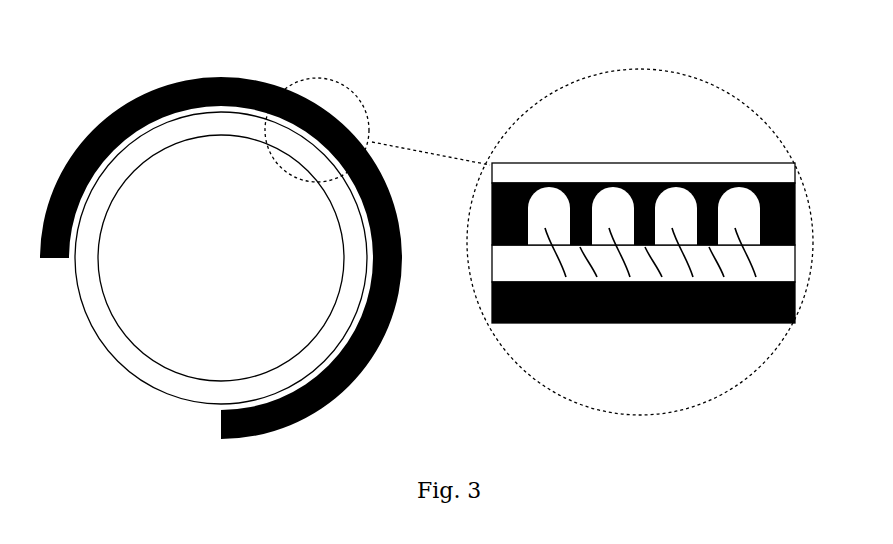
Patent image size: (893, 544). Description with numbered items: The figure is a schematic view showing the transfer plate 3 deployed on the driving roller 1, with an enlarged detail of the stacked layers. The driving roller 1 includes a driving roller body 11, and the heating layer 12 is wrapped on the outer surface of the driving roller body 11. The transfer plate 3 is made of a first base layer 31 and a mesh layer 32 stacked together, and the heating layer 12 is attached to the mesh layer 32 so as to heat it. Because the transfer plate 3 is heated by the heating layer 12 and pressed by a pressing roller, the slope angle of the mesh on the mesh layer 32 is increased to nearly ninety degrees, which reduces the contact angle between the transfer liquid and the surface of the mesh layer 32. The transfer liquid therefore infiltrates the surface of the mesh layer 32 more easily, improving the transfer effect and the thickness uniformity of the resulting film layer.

The driving roller 1 is at (285, 375).
The transfer plate 3 is at (188, 77).
The driving roller body 11 is at (797, 310).
The heating layer 12 is at (776, 265).
The first base layer 31 is at (797, 168).
The mesh layer 32 is at (797, 210).